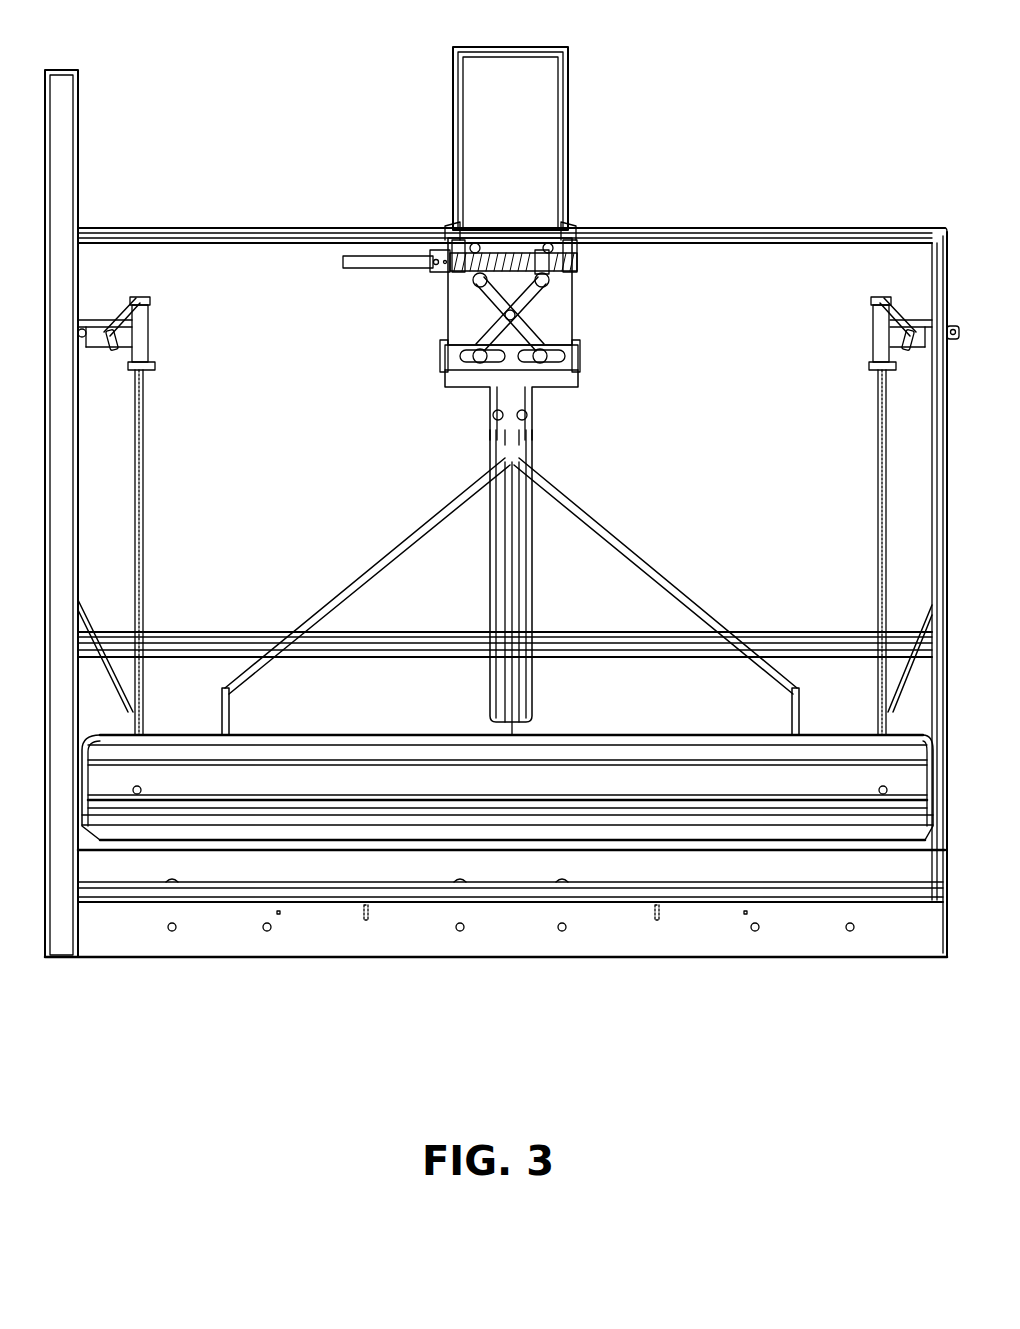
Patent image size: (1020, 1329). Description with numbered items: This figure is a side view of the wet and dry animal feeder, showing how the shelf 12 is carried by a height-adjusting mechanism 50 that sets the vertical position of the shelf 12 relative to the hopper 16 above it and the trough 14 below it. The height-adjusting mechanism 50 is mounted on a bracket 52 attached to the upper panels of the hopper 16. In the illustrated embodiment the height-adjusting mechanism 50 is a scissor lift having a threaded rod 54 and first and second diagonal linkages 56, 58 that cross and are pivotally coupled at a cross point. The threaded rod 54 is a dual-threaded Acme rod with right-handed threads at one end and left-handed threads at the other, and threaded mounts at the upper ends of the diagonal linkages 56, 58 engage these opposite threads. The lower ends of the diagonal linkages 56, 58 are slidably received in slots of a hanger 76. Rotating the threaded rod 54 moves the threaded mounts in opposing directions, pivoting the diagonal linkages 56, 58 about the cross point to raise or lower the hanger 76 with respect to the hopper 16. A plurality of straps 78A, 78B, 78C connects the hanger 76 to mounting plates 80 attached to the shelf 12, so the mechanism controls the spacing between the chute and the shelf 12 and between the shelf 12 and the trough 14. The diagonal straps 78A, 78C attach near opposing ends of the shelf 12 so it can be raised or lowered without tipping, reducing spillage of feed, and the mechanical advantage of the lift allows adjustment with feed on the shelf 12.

The shelf 12 is at (735, 835).
The trough 14 is at (525, 957).
The hopper 16 is at (820, 230).
The height-adjusting mechanism 50 is at (614, 298).
The bracket 52 is at (572, 228).
The threaded rod 54 is at (521, 258).
The first diagonal linkage 56 is at (548, 295).
The second diagonal linkage 58 is at (492, 285).
The hanger 76 is at (538, 398).
The diagonal strap 78A is at (348, 588).
The strap 78B is at (532, 570).
The diagonal strap 78C is at (675, 567).
The mounting plates 80 is at (222, 718).